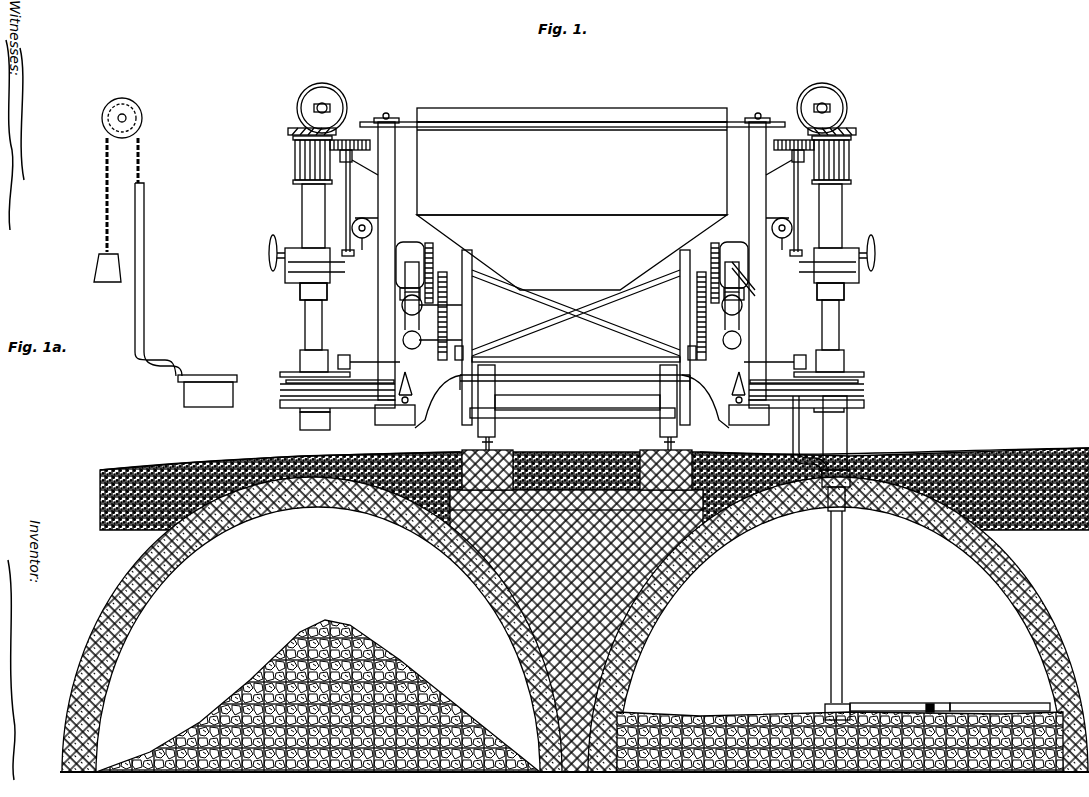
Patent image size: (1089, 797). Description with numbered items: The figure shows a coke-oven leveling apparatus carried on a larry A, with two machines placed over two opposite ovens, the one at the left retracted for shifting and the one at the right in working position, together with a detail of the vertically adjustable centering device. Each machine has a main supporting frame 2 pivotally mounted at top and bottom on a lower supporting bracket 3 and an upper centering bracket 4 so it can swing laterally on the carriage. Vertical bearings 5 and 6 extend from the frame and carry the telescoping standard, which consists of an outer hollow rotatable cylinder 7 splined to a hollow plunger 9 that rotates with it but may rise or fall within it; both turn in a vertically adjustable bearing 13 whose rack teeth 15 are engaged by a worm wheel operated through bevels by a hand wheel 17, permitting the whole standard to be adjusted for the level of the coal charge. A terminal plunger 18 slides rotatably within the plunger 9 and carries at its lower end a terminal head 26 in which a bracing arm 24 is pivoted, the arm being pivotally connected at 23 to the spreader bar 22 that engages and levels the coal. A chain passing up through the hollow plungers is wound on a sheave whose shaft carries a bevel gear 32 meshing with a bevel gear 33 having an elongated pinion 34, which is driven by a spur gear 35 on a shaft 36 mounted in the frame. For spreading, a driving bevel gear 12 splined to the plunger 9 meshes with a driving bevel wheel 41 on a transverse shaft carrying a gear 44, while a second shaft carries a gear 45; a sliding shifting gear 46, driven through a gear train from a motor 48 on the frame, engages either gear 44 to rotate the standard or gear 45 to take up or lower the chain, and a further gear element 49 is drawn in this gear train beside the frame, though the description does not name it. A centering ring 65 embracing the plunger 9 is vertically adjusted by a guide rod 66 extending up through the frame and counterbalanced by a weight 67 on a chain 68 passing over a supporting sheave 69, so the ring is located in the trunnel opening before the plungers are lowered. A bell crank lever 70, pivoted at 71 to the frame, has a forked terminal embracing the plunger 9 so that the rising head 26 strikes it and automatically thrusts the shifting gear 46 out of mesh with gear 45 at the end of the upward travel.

In FIG. 1, the larry A is at (572, 199).
In FIG. 1, the main supporting frame 2 is at (378, 176).
In FIG. 1, the lower supporting bracket 3 is at (400, 425).
In FIG. 1, the upper centering bracket 4 is at (404, 120).
In FIG. 1, the vertical bearing 5 is at (292, 390).
In FIG. 1, the vertical bearing 6 is at (290, 280).
In FIG. 1, the hollow rotatable cylinder 7 is at (302, 214).
In FIG. 1, the hollow plunger 9 is at (305, 320).
In FIG. 1, the driving bevel gear 12 is at (286, 372).
In FIG. 1, the vertically adjustable bearing 13 is at (572, 291).
In FIG. 1, the rack teeth 15 is at (300, 296).
In FIG. 1, the hand wheel 17 is at (270, 240).
In FIG. 1, the terminal plunger 18 is at (843, 580).
In FIG. 1, the spreader bar 22 is at (980, 703).
In FIG. 1, the pivotal connection 23 is at (930, 704).
In FIG. 1, the bracing arm 24 is at (872, 703).
In FIG. 1, the terminal head 26 is at (826, 704).
In FIG. 1, the bevel gear 32 is at (297, 100).
In FIG. 1, the bevel gear 33 is at (288, 128).
In FIG. 1, the elongated pinion 34 is at (295, 168).
In FIG. 1, the spur gear 35 is at (358, 140).
In FIG. 1, the shaft 36 is at (346, 212).
In FIG. 1, the driving bevel wheel 41 is at (340, 355).
In FIG. 1, the gear 44 is at (438, 415).
In FIG. 1, the gear 45 is at (745, 278).
In FIG. 1, the shifting gear 46 is at (447, 340).
In FIG. 1, the motor 48 is at (572, 271).
In FIG. 1, the rack 49 is at (405, 320).
In FIG. 1A, the centering ring 65 is at (183, 397).
In FIG. 1, the centering ring 65 is at (840, 474).
In FIG. 1A, the guide rod 66 is at (145, 288).
In FIG. 1, the guide rod 66 is at (793, 428).
In FIG. 1A, the counterbalance weight 67 is at (98, 265).
In FIG. 1A, the chain 68 is at (106, 178).
In FIG. 1A, the supporting sheave 69 is at (135, 103).
In FIG. 1, the supporting sheave 69 is at (365, 218).
In FIG. 1, the bell crank lever 70 is at (362, 408).
In FIG. 1, the pivot 71 is at (400, 405).